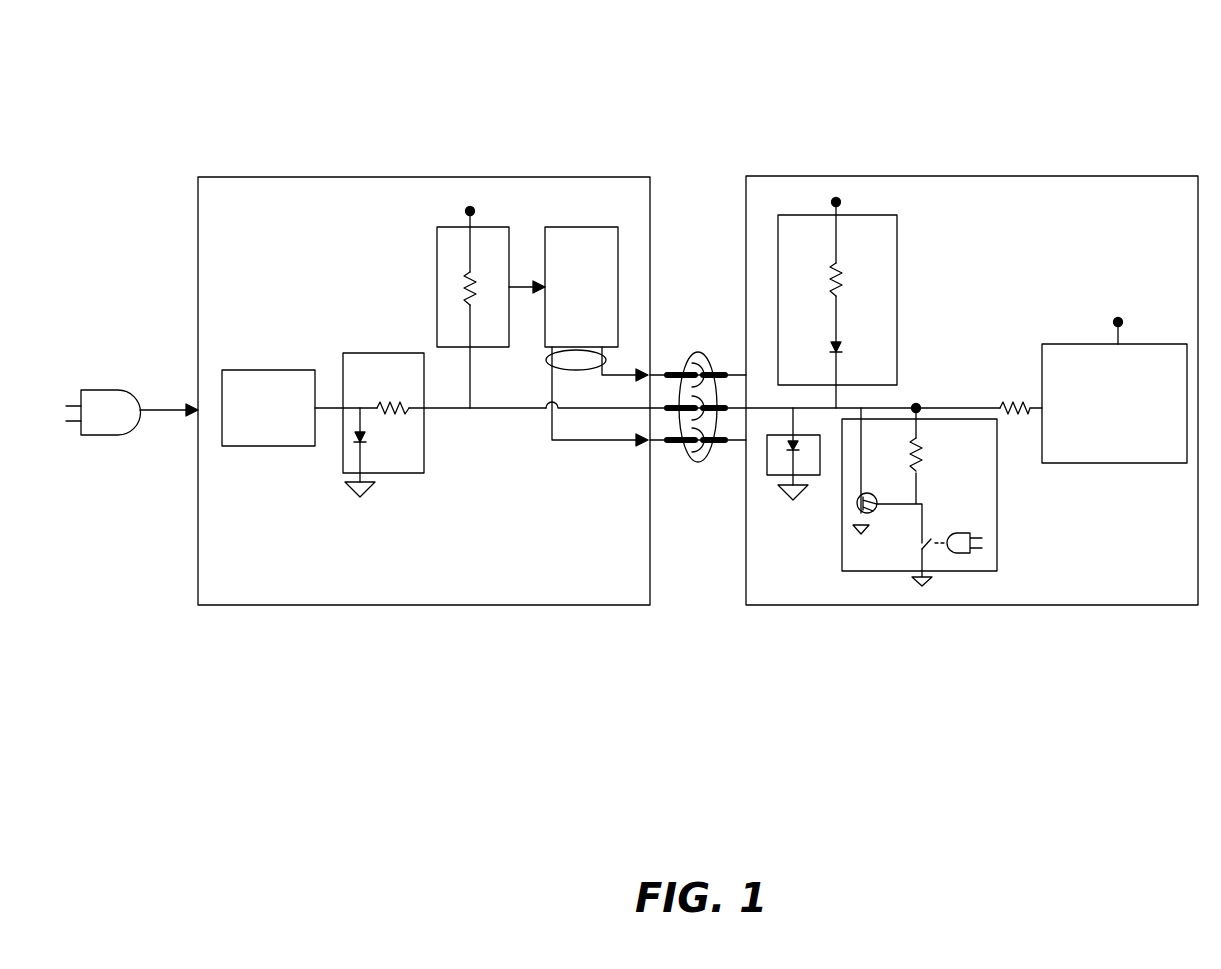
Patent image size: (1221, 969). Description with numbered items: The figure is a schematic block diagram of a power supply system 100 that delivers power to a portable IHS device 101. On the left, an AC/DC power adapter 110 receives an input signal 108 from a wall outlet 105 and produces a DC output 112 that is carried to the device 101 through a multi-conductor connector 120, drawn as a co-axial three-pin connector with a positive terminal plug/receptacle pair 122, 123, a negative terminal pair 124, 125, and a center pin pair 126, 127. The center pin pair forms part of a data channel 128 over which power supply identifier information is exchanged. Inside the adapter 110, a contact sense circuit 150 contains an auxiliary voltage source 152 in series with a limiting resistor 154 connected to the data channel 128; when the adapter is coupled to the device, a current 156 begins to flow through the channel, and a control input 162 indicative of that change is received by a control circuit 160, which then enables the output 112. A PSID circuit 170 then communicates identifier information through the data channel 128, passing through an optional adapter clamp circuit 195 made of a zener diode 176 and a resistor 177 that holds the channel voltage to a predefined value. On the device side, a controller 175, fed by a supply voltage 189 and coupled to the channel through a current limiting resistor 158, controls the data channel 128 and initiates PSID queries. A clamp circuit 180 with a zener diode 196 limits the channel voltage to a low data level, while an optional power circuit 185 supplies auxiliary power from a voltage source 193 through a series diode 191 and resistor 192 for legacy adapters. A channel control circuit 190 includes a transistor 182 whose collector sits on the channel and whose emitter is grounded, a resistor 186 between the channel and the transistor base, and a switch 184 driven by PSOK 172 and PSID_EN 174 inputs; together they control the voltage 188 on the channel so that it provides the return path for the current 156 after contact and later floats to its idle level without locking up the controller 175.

The power supply system 100 is at (1121, 50).
The portable IHS device 101 is at (972, 390).
The wall outlet 105 is at (103, 412).
The input signal 108 is at (173, 415).
The AC/DC power adapter 110 is at (424, 391).
The output 112 is at (548, 358).
The multi-conductor connector 120 is at (690, 360).
The positive terminal plug/receptacle 122 is at (677, 372).
The positive terminal plug/receptacle 123 is at (718, 368).
The negative terminal plug/receptacle 124 is at (672, 446).
The negative terminal plug/receptacle 125 is at (722, 450).
The center pin plug/receptacle 126 is at (668, 380).
The center pin plug/receptacle 127 is at (730, 385).
The data channel 128 is at (486, 409).
The contact sense circuit 150 is at (473, 287).
The auxiliary voltage source VAUX 152 is at (470, 209).
The limiting resistor RL 154 is at (465, 278).
The IPSID current 156 is at (470, 400).
The current limiting resistor RNOPSID 158 is at (1030, 401).
The control circuit 160 is at (581, 287).
The control input 162 is at (522, 283).
The PSID circuit 170 is at (268, 408).
The PSOK input 172 is at (975, 540).
The PSID_EN input 174 is at (977, 551).
The controller 175 is at (1114, 403).
The zener diode 176 is at (356, 440).
The resistor RS1 177 is at (401, 400).
The clamp circuit 180 is at (820, 476).
The transistor QJ 182 is at (870, 494).
The switch SJ 184 is at (927, 549).
The power circuit 185 is at (837, 311).
The resistor RJ 186 is at (918, 447).
The voltage VJ 188 is at (918, 406).
The supply voltage VCC 189 is at (1129, 311).
The channel control circuit 190 is at (919, 489).
The diode 191 is at (838, 347).
The resistor RA 192 is at (838, 270).
The voltage source VA 193 is at (840, 201).
The adapter clamp circuit 195 is at (430, 413).
The zener diode 196 is at (788, 446).